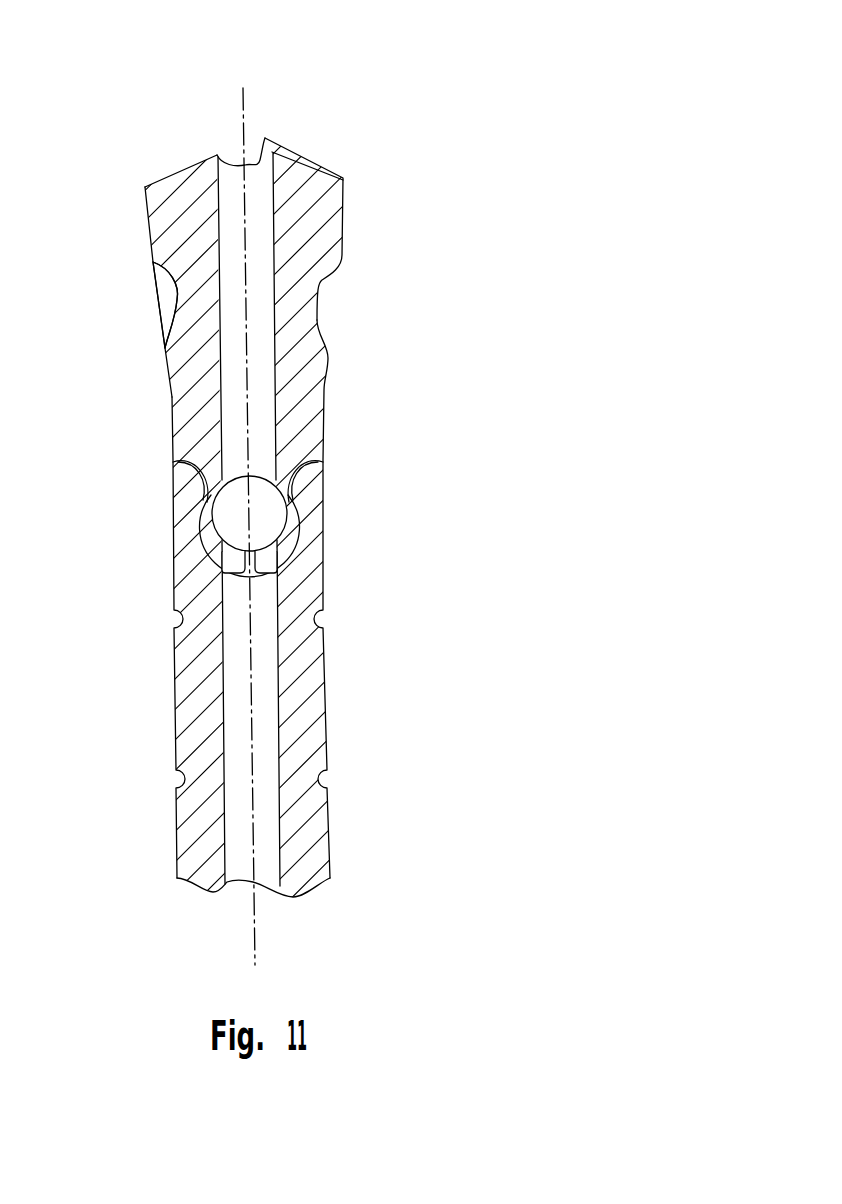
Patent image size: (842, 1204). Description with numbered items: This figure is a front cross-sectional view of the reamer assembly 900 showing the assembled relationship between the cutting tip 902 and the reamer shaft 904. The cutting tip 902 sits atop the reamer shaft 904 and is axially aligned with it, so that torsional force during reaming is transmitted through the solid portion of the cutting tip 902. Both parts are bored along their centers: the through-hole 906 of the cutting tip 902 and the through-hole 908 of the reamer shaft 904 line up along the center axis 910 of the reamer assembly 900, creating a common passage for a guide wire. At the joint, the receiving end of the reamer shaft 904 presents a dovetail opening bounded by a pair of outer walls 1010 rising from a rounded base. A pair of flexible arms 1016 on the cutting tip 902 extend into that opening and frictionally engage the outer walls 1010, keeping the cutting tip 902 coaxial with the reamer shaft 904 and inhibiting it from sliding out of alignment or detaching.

The reamer assembly 900 is at (136, 123).
The cutting tip 902 is at (297, 160).
The reamer shaft 904 is at (320, 733).
The through-hole 906 is at (258, 310).
The through-hole 908 is at (240, 835).
The center axis 910 is at (245, 110).
The outer walls 1010 is at (180, 508).
The flexible arms 1016 is at (212, 546).